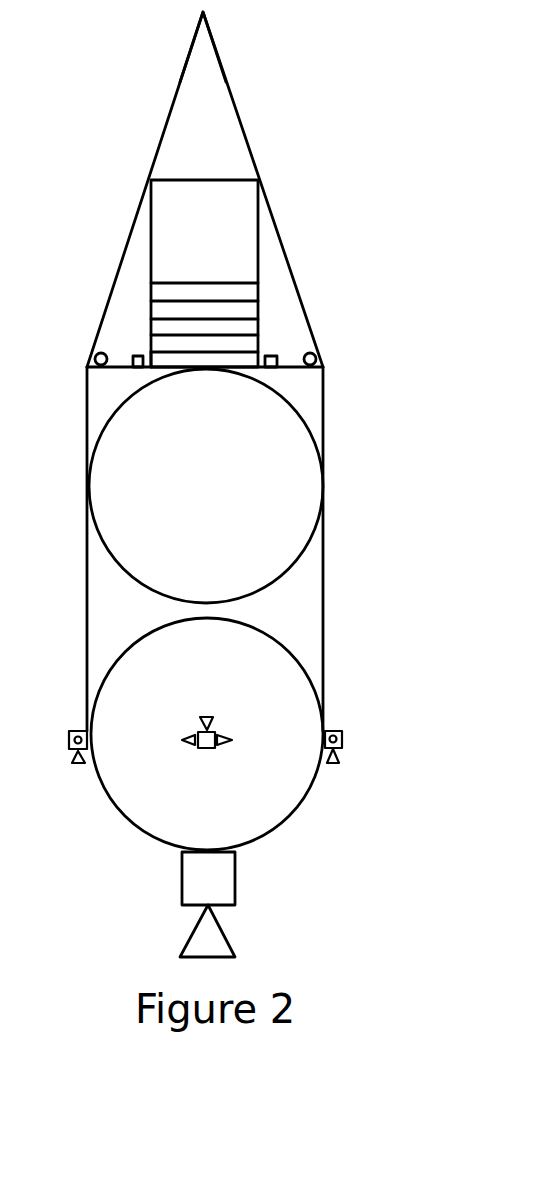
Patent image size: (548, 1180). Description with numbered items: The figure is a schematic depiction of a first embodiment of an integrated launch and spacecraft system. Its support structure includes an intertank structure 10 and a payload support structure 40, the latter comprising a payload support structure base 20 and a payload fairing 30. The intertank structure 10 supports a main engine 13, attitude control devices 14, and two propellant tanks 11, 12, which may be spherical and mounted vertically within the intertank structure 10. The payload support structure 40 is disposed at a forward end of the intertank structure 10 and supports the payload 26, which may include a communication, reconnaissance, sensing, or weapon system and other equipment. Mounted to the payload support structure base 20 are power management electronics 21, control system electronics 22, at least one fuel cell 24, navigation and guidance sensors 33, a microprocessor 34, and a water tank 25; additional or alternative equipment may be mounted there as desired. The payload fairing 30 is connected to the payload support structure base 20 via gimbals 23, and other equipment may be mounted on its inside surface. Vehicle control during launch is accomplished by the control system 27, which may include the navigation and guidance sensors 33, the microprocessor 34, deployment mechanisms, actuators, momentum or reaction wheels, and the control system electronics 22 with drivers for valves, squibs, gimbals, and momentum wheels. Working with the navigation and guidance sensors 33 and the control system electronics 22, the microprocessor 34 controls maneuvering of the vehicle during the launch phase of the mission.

The intertank structure 10 is at (337, 587).
The propellant tank 11 is at (315, 417).
The propellant tank 12 is at (310, 664).
The main engine 13 is at (247, 880).
The attitude control devices 14 is at (358, 741).
The payload support structure base 20 is at (110, 375).
The power management electronics 21 is at (120, 350).
The control system electronics 22 is at (291, 350).
The gimbals 23 is at (326, 357).
The fuel cell 24 is at (144, 348).
The water tank 25 is at (148, 328).
The payload 26 is at (223, 170).
The control system 27 is at (216, 278).
The payload fairing 30 is at (227, 49).
The navigation and guidance sensors 33 is at (254, 318).
The microprocessor 34 is at (250, 297).
The payload support structure 40 is at (139, 134).